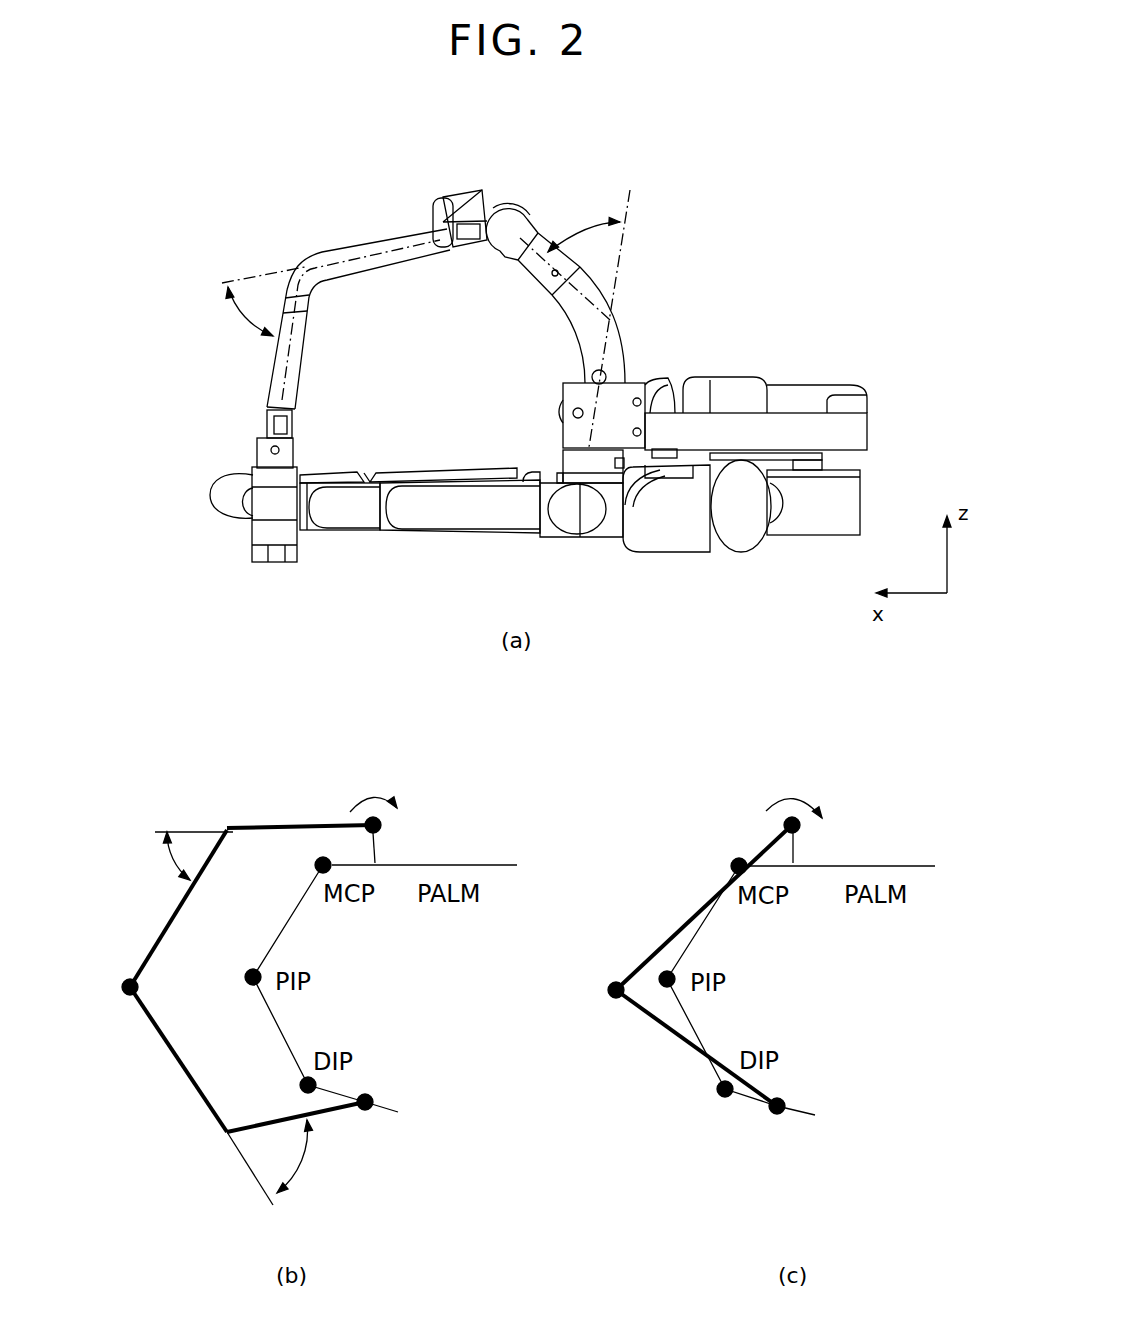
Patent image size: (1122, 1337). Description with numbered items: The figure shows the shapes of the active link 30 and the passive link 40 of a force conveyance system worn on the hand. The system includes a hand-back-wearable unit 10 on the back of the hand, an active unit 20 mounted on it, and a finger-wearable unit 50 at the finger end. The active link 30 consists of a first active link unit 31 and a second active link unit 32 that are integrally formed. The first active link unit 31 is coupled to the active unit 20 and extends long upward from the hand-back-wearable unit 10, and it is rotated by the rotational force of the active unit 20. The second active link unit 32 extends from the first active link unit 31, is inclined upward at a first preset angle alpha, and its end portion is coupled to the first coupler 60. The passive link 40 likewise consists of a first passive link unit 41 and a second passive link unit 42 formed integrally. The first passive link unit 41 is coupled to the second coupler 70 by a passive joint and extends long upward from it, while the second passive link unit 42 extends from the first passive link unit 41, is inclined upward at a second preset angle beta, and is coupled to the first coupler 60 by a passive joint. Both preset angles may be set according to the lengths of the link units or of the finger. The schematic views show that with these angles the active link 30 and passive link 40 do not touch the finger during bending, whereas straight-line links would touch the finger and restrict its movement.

The hand-back-wearable unit 10 is at (797, 438).
The active unit 20 is at (806, 390).
The active link 30 is at (703, 243).
The first active link unit 31 is at (617, 340).
The second active link unit 32 is at (563, 261).
The passive link 40 is at (153, 245).
The first passive link unit 41 is at (272, 378).
The second passive link unit 42 is at (357, 247).
The finger-wearable unit 50 is at (234, 538).
The first coupler 60 is at (351, 559).
The second coupler 70 is at (497, 811).